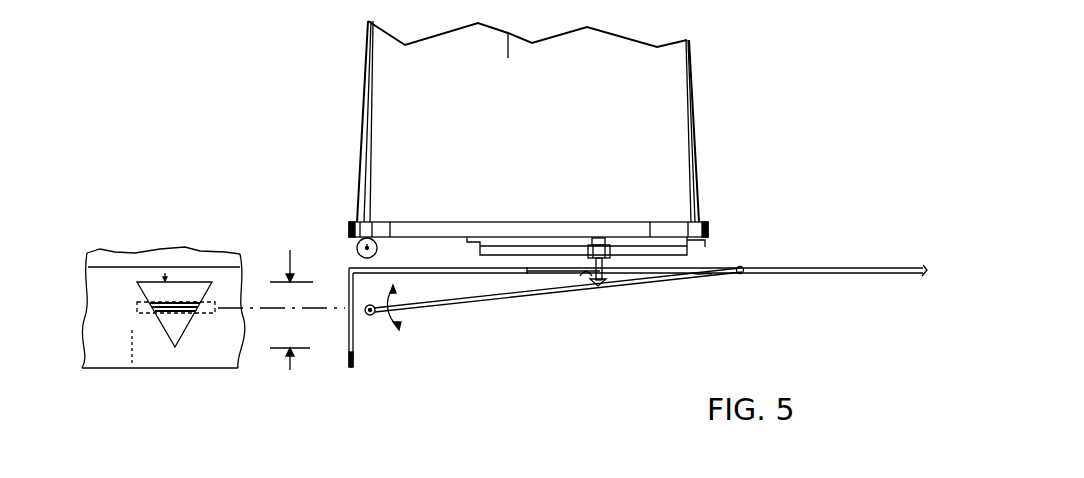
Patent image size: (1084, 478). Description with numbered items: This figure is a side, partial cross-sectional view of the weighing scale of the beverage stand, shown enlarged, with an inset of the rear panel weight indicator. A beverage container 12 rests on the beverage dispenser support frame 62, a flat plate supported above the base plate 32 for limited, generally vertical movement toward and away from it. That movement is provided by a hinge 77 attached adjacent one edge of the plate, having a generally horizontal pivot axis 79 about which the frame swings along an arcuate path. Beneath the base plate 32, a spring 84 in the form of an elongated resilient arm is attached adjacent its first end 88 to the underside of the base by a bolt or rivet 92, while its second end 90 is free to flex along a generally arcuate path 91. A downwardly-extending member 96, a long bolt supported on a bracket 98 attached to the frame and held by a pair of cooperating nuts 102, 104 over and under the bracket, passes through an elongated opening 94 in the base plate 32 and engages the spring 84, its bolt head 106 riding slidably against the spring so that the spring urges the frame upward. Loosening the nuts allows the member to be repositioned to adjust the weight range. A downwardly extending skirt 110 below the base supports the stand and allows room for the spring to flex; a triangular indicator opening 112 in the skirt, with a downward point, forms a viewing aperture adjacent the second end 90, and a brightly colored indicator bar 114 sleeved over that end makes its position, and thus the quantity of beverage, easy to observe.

The beverage container 12 is at (638, 108).
The base plate 32 is at (822, 268).
The beverage dispenser support frame 62 is at (508, 222).
The hinge 77 is at (356, 243).
The pivot axis 79 is at (368, 222).
The spring 84 is at (478, 300).
The first end 88 is at (748, 273).
The second end 90 is at (367, 296).
The arcuate path 91 is at (400, 292).
The bolt or rivet 92 is at (740, 275).
The elongated opening 94 is at (527, 270).
The downwardly-extending member 96 is at (592, 276).
The bracket 98 is at (699, 243).
The nut 102 is at (604, 238).
The nut 104 is at (612, 258).
The bolt head 106 is at (606, 283).
The skirt 110 is at (122, 357).
The indicator opening 112 is at (180, 335).
The indicator bar 114 is at (178, 300).